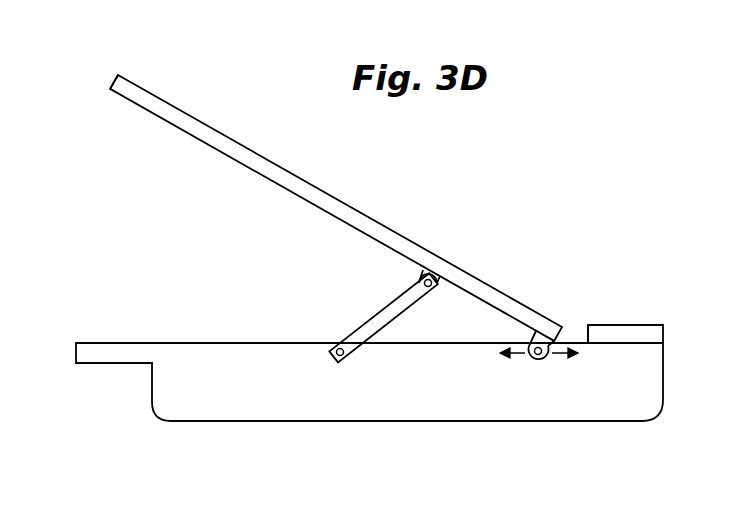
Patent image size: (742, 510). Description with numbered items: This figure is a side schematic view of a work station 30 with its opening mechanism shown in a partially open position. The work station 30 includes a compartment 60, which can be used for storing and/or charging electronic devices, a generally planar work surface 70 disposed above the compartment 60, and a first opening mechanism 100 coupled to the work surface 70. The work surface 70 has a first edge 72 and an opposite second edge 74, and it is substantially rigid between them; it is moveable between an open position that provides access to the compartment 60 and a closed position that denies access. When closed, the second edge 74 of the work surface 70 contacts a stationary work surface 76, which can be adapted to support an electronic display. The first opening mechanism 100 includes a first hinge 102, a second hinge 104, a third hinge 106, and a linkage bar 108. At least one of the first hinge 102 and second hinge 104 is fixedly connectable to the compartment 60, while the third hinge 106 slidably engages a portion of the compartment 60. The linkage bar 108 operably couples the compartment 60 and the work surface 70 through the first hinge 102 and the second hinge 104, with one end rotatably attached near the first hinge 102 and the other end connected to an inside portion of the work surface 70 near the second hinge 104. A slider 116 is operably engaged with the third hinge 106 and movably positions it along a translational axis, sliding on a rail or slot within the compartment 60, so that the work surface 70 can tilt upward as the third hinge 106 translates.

The work station 30 is at (514, 253).
The compartment 60 is at (664, 387).
The work surface 70 is at (188, 116).
The first edge 72 is at (112, 83).
The second edge 74 is at (563, 333).
The stationary work surface 76 is at (656, 337).
The first opening mechanism 100 is at (338, 308).
The first hinge 102 is at (337, 346).
The second hinge 104 is at (434, 273).
The third hinge 106 is at (541, 346).
The linkage bar 108 is at (400, 292).
The slider 116 is at (541, 356).